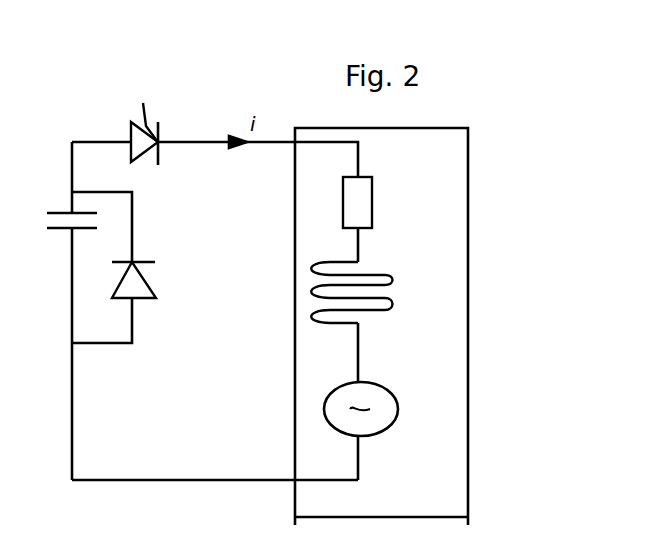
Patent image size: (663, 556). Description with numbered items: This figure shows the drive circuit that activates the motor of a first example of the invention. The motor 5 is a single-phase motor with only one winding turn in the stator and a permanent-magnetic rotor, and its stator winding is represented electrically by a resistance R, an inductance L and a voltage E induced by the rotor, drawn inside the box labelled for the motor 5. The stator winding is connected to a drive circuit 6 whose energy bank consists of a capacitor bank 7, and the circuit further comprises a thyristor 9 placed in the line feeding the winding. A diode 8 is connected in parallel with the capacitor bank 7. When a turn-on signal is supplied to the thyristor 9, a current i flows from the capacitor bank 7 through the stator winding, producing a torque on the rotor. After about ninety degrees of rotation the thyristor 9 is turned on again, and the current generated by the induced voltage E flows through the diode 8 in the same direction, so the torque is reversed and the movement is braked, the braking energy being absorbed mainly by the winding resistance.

The motor 5 is at (468, 418).
The drive circuit 6 is at (200, 482).
The capacitor bank 7 is at (63, 230).
The diode 8 is at (138, 285).
The thyristor 9 is at (146, 126).